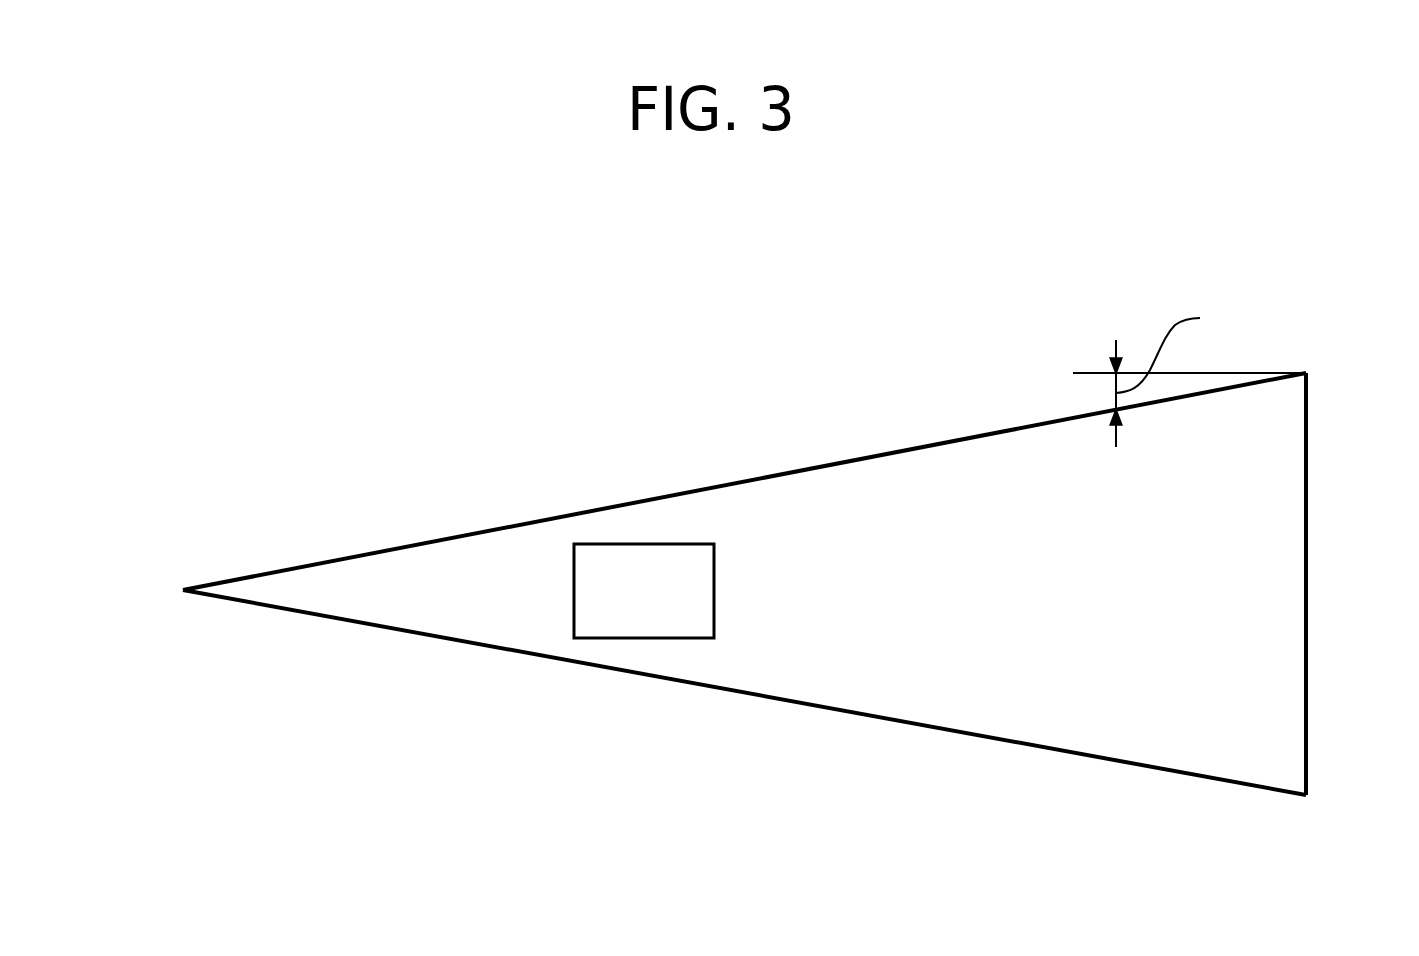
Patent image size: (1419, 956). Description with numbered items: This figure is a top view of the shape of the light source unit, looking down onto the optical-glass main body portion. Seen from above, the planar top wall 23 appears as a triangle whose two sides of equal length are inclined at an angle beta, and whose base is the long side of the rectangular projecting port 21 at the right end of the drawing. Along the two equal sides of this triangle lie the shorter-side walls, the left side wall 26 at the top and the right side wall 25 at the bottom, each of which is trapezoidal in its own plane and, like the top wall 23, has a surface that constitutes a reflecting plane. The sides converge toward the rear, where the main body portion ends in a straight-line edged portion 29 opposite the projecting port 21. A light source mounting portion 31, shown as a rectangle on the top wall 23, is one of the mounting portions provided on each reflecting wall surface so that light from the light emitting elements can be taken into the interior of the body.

The projecting port 21 is at (1306, 575).
The top wall 23 is at (905, 470).
The right side wall 25 is at (906, 700).
The left side wall 26 is at (772, 474).
The straight-line edged portion 29 is at (183, 590).
The light source mounting portion 31 is at (628, 623).